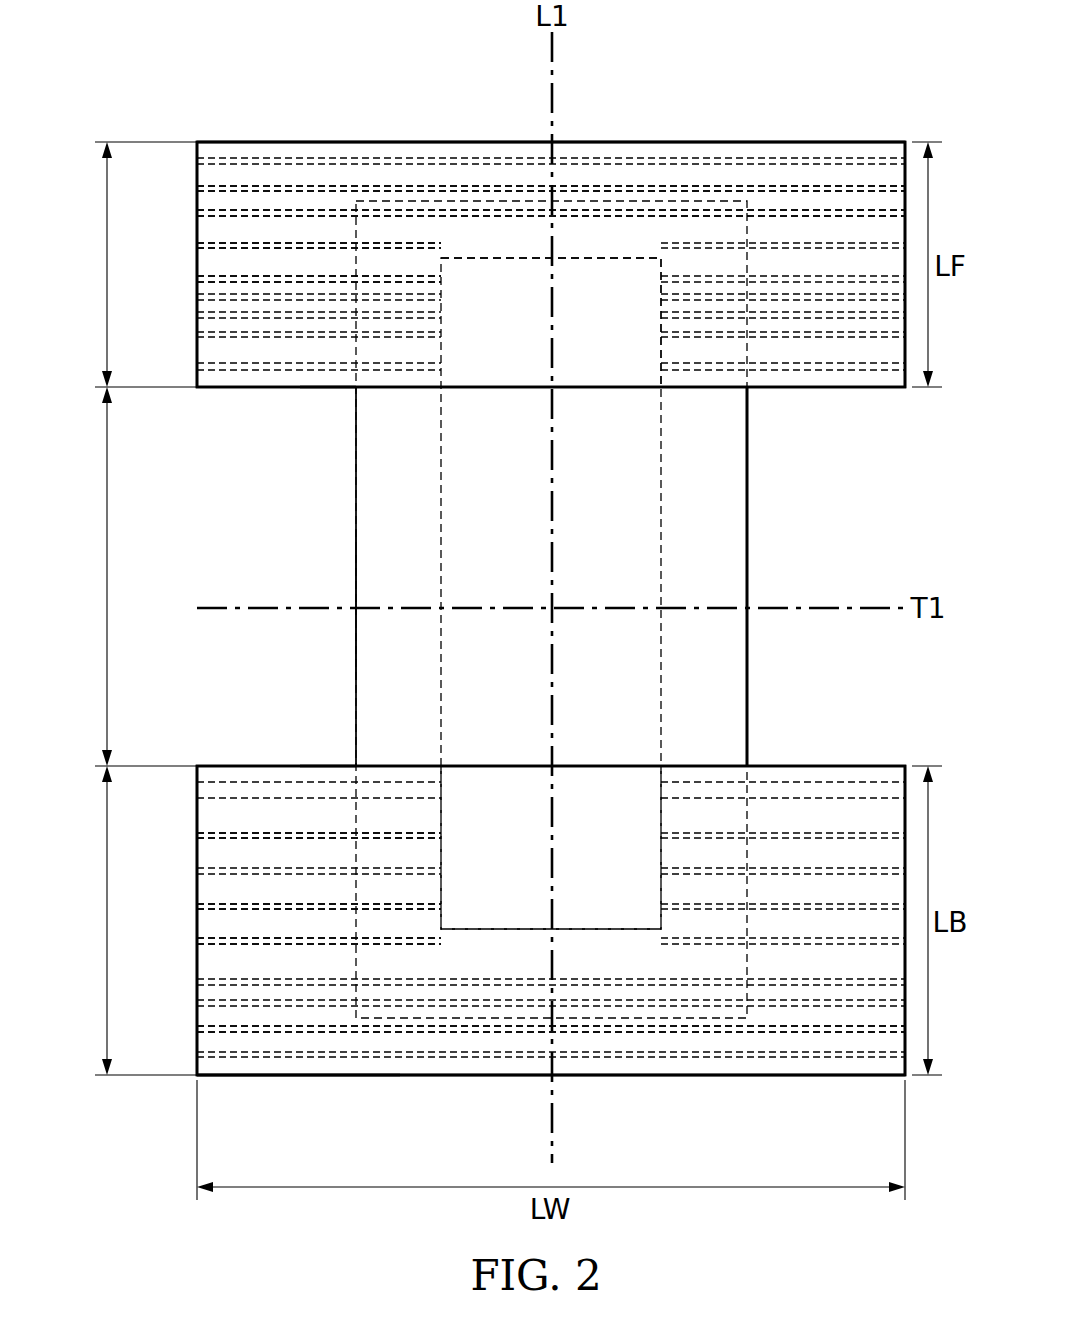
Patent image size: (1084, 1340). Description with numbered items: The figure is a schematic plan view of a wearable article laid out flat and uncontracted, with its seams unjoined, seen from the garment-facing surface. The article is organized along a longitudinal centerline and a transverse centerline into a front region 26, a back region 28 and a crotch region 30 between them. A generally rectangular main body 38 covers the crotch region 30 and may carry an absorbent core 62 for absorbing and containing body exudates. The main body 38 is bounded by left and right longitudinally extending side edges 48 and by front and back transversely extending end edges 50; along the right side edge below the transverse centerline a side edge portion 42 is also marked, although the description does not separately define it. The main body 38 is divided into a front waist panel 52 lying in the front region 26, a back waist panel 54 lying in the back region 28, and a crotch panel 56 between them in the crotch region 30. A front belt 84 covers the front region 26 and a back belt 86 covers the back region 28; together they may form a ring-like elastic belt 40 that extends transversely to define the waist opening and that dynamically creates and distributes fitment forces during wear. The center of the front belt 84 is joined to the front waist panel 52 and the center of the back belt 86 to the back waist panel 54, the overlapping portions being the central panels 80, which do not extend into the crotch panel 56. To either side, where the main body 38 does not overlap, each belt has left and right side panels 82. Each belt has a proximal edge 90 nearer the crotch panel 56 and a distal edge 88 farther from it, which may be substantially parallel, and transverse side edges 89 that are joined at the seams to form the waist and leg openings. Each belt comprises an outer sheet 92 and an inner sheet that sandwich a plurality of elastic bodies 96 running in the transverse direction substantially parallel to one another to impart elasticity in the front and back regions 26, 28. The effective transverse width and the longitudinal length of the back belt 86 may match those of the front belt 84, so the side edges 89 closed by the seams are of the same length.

The front region 26 is at (107, 264).
The back region 28 is at (107, 946).
The crotch region 30 is at (107, 578).
The main body 38 is at (760, 562).
The elastic belt 40 is at (697, 69).
The longitudinal side edge portion 42 is at (748, 665).
The side edge 48 is at (356, 501).
The end edge 50 is at (447, 200).
The front waist panel 52 is at (476, 341).
The back waist panel 54 is at (476, 872).
The crotch panel 56 is at (346, 577).
The absorbent core 62 is at (441, 530).
The central panel 80 is at (515, 183).
The side panel 82 is at (264, 348).
The front belt 84 is at (838, 142).
The back belt 86 is at (240, 1075).
The distal edge 88 is at (585, 142).
The side edge 89 is at (197, 230).
The proximal edge 90 is at (330, 387).
The outer sheet 92 is at (238, 148).
The elastic bodies 96 is at (214, 191).